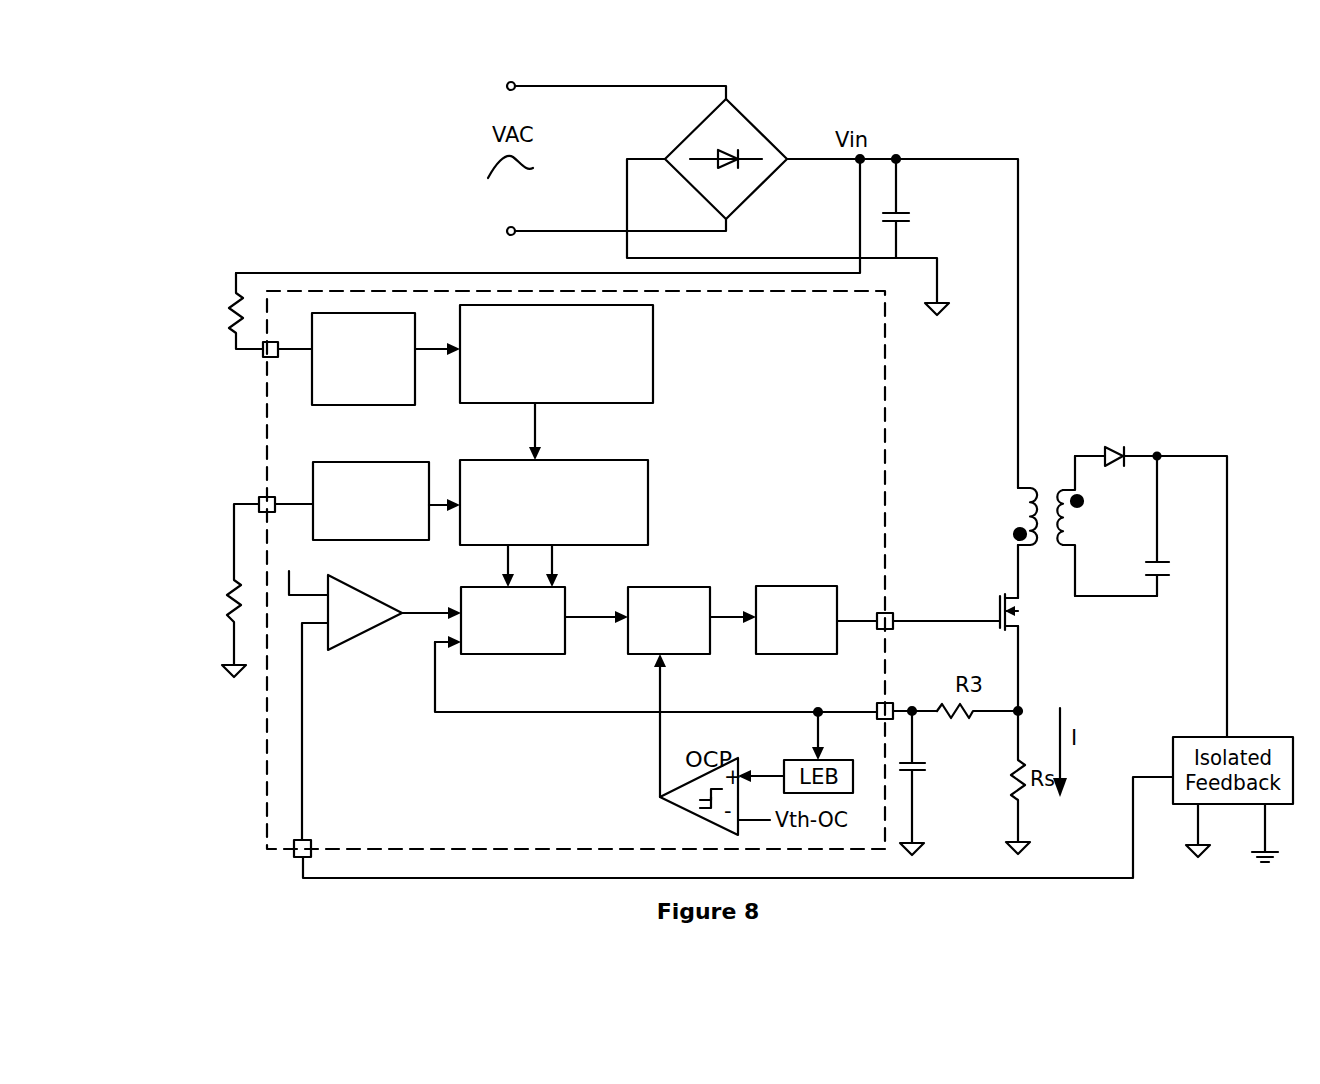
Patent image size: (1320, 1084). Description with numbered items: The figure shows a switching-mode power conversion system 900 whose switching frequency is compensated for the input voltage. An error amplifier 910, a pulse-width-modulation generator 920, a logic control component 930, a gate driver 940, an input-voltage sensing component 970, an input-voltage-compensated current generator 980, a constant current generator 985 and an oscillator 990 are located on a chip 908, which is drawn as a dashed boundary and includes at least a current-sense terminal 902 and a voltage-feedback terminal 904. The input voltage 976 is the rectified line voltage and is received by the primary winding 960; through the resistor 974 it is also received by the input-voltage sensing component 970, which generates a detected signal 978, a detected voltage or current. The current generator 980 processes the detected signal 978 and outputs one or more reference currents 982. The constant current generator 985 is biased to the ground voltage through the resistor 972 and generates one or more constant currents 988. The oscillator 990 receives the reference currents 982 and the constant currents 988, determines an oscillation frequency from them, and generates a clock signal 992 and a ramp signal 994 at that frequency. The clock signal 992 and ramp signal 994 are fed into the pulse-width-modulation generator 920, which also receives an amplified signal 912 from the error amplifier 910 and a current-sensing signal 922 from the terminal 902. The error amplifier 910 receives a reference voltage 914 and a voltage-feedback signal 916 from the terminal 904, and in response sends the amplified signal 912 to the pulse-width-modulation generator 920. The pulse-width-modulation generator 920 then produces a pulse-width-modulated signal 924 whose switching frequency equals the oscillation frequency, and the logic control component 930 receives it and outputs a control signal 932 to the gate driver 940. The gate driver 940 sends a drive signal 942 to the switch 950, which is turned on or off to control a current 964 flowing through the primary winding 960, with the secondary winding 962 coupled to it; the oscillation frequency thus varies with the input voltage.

The switching-mode power conversion system 900 is at (182, 149).
The terminal 902 is at (892, 698).
The terminal 904 is at (293, 854).
The chip 908 is at (887, 362).
The error amplifier 910 is at (352, 640).
The amplified signal 912 is at (405, 618).
The reference voltage 914 is at (288, 583).
The voltage-feedback signal 916 is at (303, 784).
The PWM generator 920 is at (508, 655).
The current-sensing signal 922 is at (478, 714).
The PWM signal 924 is at (566, 621).
The logic control component 930 is at (676, 587).
The control signal 932 is at (710, 620).
The gate driver 940 is at (797, 586).
The drive signal 942 is at (862, 629).
The switch 950 is at (1000, 600).
The primary winding 960 is at (1045, 531).
The secondary winding 962 is at (1066, 548).
The current 964 is at (1019, 562).
The input-voltage sensing component 970 is at (373, 405).
The resistor 972 is at (228, 597).
The resistor 974 is at (229, 317).
The input voltage 976 is at (860, 192).
The detected signal 978 is at (428, 352).
The input-voltage-compensated current generator 980 is at (653, 362).
The reference currents 982 is at (542, 434).
The constant current generator 985 is at (357, 541).
The constant currents 988 is at (433, 505).
The oscillator 990 is at (650, 507).
The clock signal 992 is at (555, 552).
The ramp signal 994 is at (504, 566).